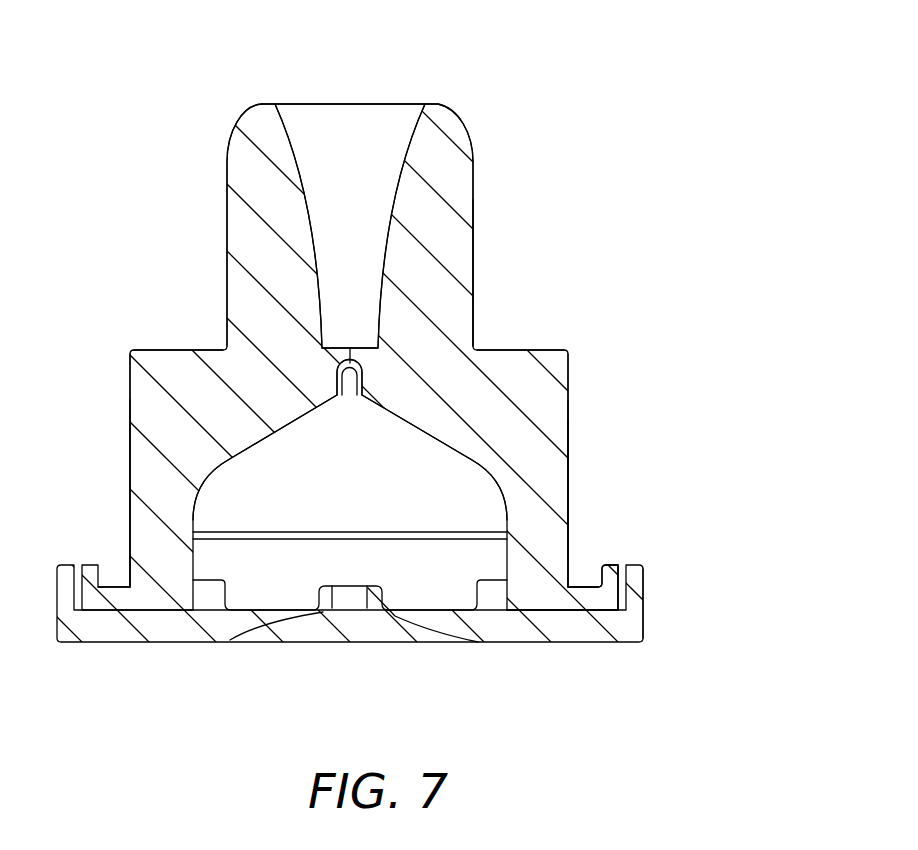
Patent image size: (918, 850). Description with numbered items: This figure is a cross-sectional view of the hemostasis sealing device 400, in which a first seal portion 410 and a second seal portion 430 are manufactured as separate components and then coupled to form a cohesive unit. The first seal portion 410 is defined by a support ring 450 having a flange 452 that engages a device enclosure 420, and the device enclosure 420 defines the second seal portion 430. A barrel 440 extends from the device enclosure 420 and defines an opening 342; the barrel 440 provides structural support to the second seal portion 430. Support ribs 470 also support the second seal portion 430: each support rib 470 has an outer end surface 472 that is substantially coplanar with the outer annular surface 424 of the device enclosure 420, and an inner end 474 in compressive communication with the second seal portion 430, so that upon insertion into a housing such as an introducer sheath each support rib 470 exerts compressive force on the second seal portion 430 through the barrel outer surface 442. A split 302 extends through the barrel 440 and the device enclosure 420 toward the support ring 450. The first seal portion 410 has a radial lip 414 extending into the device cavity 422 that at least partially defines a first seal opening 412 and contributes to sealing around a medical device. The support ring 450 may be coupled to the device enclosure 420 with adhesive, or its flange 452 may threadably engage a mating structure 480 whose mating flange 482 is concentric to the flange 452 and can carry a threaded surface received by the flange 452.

The hemostasis sealing device 400 is at (243, 92).
The opening 342 is at (392, 132).
The split 302 is at (350, 362).
The second seal portion 430 is at (326, 359).
The barrel 440 is at (480, 180).
The barrel outer surface 442 is at (474, 291).
The inner end 474 is at (225, 346).
The support rib 470 is at (160, 358).
The outer end surface 472 is at (130, 367).
The device enclosure 420 is at (578, 448).
The outer annular surface 424 is at (568, 483).
The mating structure 480 is at (586, 596).
The mating flange 482 is at (615, 582).
The support ring 450 is at (633, 630).
The flange 452 is at (645, 580).
The device cavity 422 is at (420, 485).
The first seal portion 410 is at (427, 623).
The first seal opening 412 is at (347, 602).
The radial lip 414 is at (317, 598).